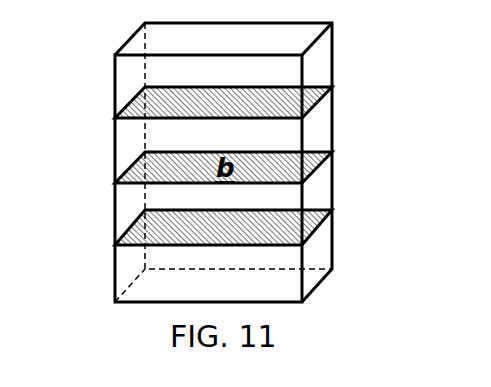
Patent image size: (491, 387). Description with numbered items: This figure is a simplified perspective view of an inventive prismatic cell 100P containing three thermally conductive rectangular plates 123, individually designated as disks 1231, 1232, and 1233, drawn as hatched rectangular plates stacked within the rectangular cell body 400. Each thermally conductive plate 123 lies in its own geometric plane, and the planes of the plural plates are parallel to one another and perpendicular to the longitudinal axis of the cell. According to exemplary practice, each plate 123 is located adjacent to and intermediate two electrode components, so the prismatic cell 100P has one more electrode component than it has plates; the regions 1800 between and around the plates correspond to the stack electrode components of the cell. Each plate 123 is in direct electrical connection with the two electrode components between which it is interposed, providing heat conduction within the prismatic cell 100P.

The substrate/housing block 400 is at (112, 265).
The thermally conductive plate 123 is at (168, 137).
The first disk 1231 is at (150, 100).
The second disk 1232 is at (150, 164).
The third disk 1233 is at (140, 227).
The spacing regions between layers 1800 is at (323, 63).
The prismatic cell 100P is at (338, 295).